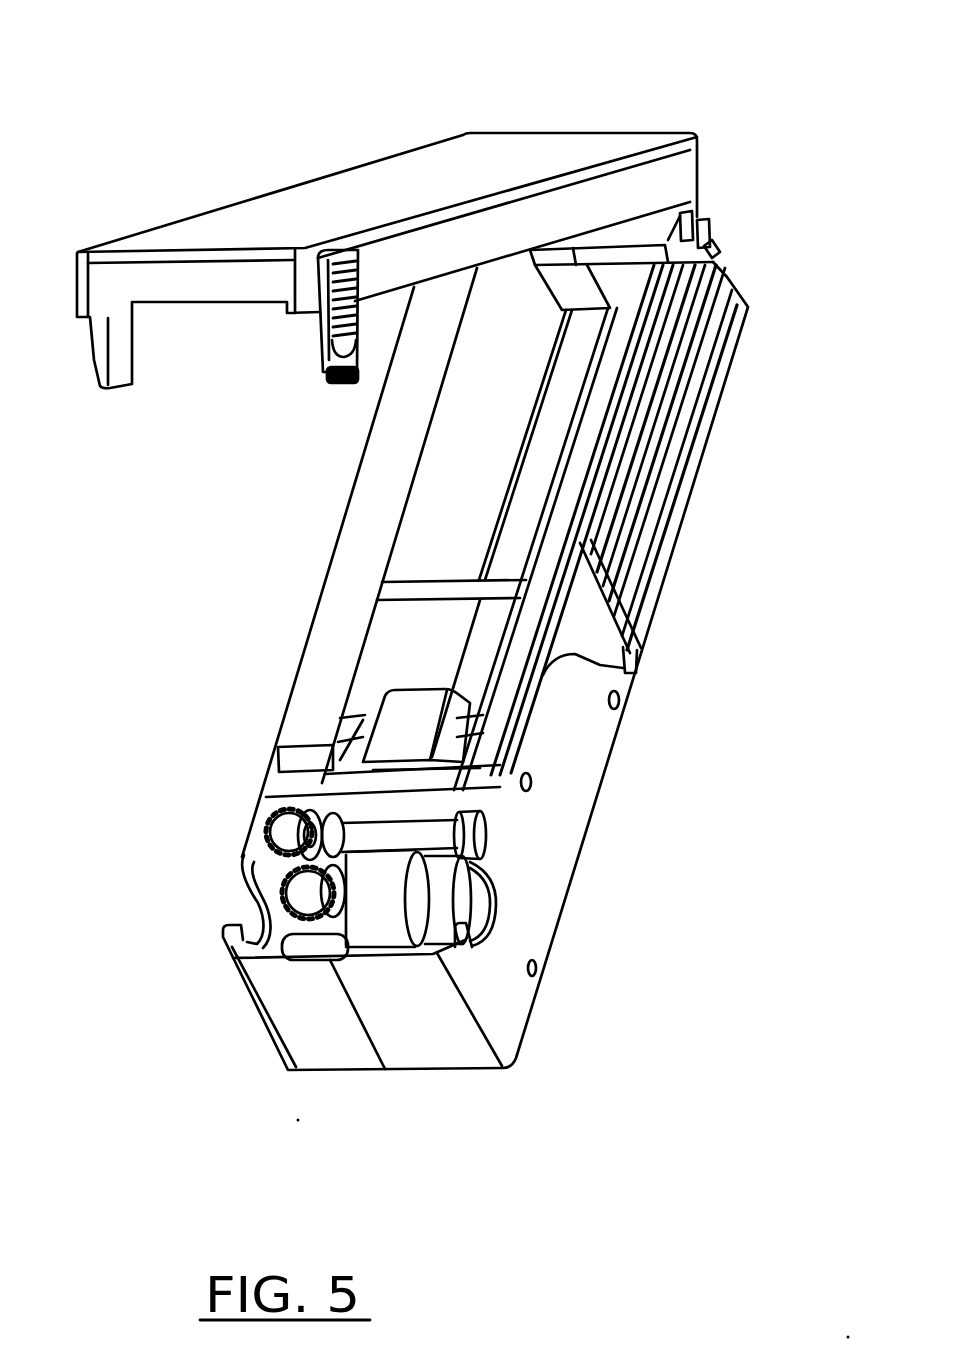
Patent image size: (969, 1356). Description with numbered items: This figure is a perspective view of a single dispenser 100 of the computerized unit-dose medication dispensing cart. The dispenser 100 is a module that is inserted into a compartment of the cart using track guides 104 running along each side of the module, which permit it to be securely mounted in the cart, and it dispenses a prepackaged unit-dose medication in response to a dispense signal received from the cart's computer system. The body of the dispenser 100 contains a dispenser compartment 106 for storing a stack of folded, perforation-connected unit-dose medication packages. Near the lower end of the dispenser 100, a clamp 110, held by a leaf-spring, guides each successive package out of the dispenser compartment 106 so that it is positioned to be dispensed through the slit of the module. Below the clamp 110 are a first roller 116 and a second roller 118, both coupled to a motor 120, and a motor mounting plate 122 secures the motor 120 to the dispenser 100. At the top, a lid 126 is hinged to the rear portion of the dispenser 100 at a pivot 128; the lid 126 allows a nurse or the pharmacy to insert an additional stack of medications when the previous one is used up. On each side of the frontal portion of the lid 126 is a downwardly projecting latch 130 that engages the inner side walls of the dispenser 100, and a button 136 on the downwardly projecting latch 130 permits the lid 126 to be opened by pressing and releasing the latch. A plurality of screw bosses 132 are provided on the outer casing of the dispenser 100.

The dispenser 100 is at (665, 120).
The track guides 104 is at (657, 433).
The dispenser compartment 106 is at (515, 548).
The clamp 110 is at (383, 720).
The first roller 116 is at (290, 808).
The second roller 118 is at (330, 934).
The motor 120 is at (455, 898).
The motor mounting plate 122 is at (343, 950).
The lid 126 is at (352, 182).
The pivot 128 is at (700, 225).
The downwardly projecting latch 130 is at (327, 380).
The screw bosses 132 is at (714, 246).
The button 136 is at (337, 330).